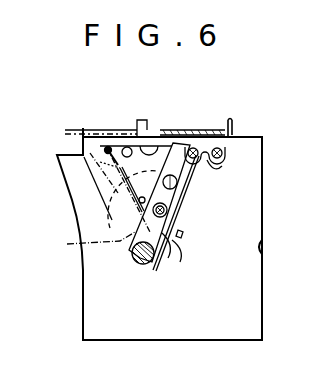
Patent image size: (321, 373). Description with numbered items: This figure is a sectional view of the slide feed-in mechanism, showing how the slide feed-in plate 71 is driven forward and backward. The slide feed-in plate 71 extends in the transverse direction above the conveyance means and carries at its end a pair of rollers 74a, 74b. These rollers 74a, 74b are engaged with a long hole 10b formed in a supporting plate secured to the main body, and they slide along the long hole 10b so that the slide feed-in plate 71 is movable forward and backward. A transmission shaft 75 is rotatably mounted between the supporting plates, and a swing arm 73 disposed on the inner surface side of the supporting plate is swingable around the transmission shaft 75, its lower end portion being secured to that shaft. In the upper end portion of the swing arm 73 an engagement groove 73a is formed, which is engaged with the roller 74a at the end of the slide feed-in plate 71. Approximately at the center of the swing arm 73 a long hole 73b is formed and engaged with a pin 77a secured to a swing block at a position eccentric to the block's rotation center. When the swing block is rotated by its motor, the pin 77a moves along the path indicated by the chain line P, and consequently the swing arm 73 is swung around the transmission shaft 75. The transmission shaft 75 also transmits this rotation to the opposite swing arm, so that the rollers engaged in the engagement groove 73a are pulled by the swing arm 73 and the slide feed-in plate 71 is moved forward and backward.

The long hole 10b is at (164, 141).
The slide feed-in plate 71 is at (201, 139).
The swing arm 73 is at (163, 236).
The engagement groove 73a is at (190, 167).
The long hole 73b is at (193, 200).
The roller 74a is at (225, 165).
The roller 74b is at (222, 147).
The transmission shaft 75 is at (152, 272).
The pin 77a is at (175, 207).
The chain line P is at (93, 243).